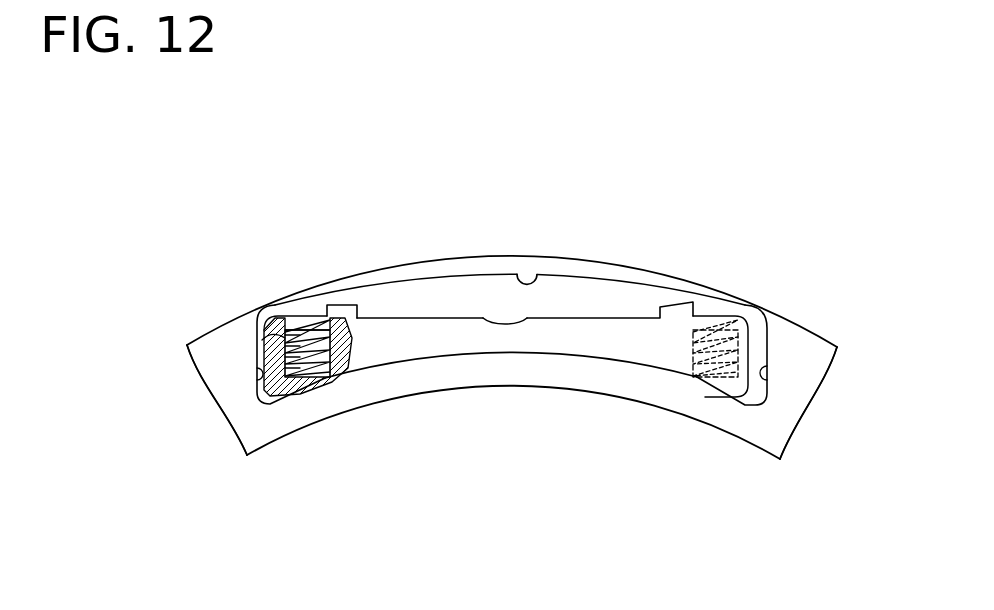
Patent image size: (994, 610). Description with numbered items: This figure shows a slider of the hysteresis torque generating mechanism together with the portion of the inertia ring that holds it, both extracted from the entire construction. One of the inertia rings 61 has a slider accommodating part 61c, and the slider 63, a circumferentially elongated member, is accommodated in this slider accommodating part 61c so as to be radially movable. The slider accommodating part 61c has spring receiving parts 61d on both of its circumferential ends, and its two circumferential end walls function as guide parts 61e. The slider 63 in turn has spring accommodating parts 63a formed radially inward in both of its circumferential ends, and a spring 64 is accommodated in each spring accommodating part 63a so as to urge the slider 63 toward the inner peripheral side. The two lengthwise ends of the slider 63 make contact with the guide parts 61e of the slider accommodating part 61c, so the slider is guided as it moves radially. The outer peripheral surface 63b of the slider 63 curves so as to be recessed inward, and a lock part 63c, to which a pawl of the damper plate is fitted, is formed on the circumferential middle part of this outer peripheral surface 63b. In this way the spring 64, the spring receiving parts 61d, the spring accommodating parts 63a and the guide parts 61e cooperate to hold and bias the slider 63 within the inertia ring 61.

The inertia ring 61 is at (793, 332).
The slider accommodating part 61c is at (540, 280).
The spring receiving part 61d is at (287, 316).
The guide part 61e is at (234, 411).
The slider 63 is at (566, 356).
The spring accommodating part 63a is at (322, 390).
The outer peripheral surface 63b is at (427, 319).
The lock part 63c is at (527, 308).
The spring 64 is at (272, 337).